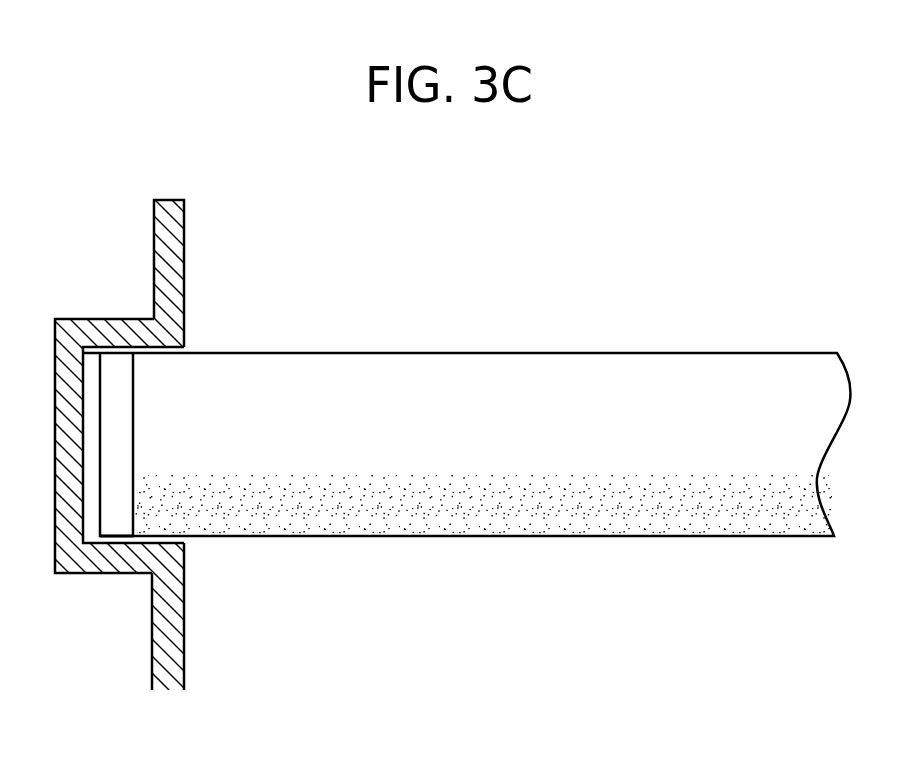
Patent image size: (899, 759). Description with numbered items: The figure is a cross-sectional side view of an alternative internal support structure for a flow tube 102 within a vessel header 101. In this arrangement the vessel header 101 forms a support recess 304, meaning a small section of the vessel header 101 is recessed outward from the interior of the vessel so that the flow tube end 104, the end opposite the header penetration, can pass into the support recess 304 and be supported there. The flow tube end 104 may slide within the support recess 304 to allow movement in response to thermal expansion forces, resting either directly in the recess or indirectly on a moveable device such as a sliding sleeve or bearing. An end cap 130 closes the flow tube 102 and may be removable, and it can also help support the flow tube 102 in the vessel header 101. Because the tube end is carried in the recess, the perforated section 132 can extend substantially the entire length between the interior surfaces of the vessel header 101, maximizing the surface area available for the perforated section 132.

The vessel header 101 is at (184, 243).
The support recess 304 is at (55, 383).
The flow tube 102 is at (383, 353).
The flow tube end 104 is at (152, 393).
The perforated section 132 is at (465, 517).
The end cap 130 is at (115, 537).